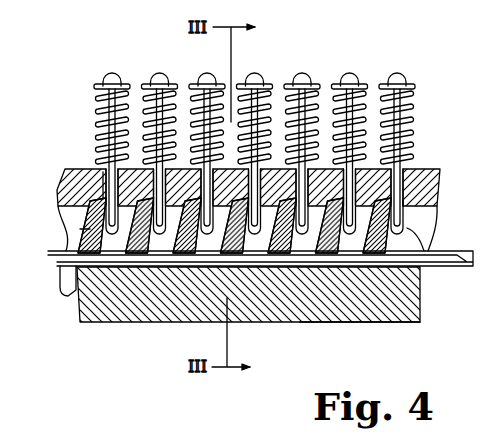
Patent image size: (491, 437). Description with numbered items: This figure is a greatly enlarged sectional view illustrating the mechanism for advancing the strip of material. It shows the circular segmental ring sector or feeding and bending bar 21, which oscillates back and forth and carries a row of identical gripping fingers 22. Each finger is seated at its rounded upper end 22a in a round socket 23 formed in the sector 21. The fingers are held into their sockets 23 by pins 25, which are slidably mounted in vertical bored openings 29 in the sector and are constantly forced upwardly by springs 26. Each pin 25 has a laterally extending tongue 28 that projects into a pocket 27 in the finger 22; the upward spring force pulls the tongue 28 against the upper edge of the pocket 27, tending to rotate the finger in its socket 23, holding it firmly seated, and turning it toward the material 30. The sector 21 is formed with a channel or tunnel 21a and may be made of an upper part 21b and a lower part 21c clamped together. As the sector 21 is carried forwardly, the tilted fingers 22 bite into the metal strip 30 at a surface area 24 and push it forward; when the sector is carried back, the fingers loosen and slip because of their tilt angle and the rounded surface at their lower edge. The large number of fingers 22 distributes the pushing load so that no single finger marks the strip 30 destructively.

The feeding and bending bar 21 is at (248, 212).
The channel 21a is at (58, 242).
The upper part 21b is at (62, 180).
The lower part 21c is at (396, 323).
The gripping fingers 22 is at (394, 248).
The upper ends 22a is at (407, 226).
The round socket 23 is at (386, 198).
The surface area 24 is at (373, 270).
The pins 25 is at (398, 80).
The springs 26 is at (411, 131).
The pockets 27 is at (80, 229).
The tongues 28 is at (110, 212).
The vertical bored openings 29 is at (100, 172).
The material 30 is at (62, 270).